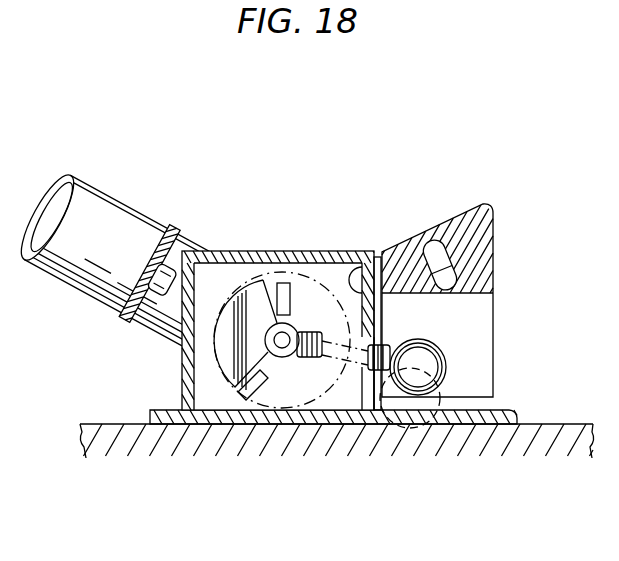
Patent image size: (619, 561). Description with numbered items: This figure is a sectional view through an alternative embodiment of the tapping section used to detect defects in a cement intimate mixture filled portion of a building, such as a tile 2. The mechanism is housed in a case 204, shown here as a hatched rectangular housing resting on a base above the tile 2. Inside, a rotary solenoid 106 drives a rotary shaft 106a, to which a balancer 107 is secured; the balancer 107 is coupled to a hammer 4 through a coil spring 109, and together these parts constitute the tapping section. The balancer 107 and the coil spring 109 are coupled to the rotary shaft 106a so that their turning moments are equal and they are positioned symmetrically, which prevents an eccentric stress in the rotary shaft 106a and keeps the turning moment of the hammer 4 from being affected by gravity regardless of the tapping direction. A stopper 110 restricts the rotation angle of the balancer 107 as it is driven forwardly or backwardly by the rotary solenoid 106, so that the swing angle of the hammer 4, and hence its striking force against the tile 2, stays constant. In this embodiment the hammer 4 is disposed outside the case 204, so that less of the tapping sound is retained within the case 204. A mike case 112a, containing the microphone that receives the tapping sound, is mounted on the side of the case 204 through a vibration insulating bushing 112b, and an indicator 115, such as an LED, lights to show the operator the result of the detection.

The tile 2 is at (547, 433).
The hammer 4 is at (418, 385).
The rotary solenoid 106 is at (310, 290).
The rotary shaft 106a is at (265, 273).
The balancer 107 is at (242, 285).
The coil spring 109 is at (390, 353).
The stopper 110 is at (252, 398).
The mike case 112a is at (478, 205).
The vibration insulating bushing 112b is at (376, 258).
The indicator 115 is at (423, 247).
The case 204 is at (176, 373).